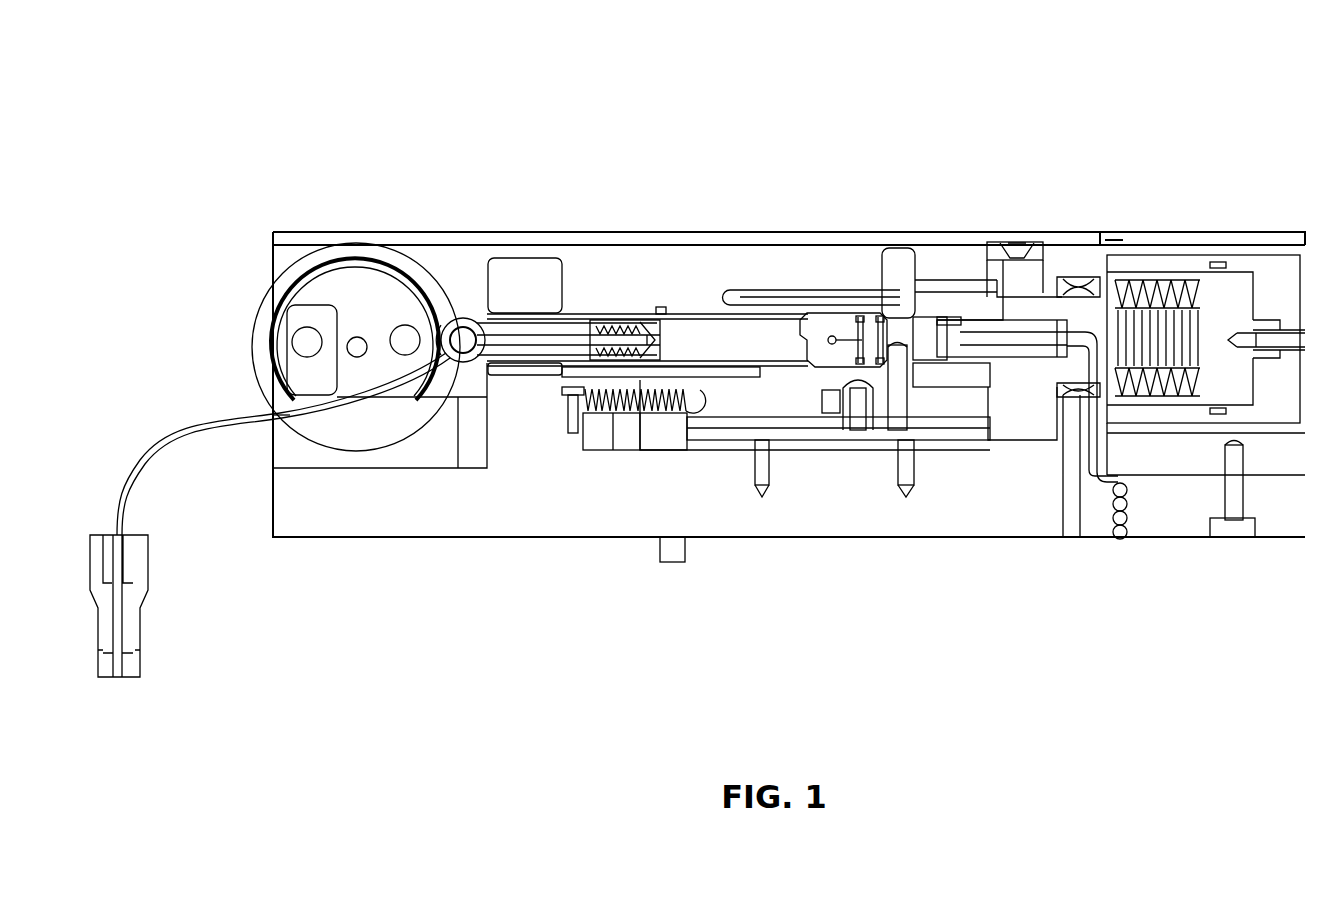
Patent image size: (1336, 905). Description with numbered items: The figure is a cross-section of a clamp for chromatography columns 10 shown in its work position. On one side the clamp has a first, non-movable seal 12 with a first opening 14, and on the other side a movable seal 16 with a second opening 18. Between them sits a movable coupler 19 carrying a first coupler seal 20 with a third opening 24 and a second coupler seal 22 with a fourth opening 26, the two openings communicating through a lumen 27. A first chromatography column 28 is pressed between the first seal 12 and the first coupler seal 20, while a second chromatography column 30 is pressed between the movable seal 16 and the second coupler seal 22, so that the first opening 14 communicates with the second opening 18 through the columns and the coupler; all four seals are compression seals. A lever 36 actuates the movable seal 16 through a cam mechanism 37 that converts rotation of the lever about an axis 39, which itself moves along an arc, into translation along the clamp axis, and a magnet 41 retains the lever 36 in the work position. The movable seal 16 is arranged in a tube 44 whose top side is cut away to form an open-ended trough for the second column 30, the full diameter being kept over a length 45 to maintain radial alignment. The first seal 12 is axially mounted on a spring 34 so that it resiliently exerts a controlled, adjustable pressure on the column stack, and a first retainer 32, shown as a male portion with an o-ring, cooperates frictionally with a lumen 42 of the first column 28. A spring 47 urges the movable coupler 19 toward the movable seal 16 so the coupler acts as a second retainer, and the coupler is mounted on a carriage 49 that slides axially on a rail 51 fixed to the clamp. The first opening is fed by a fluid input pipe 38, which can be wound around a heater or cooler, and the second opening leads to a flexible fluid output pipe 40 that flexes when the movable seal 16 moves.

The clamp for chromatography columns 10 is at (352, 160).
The first seal 12 is at (968, 294).
The first opening 14 is at (1000, 352).
The movable seal 16 is at (668, 348).
The second opening 18 is at (665, 330).
The movable coupler 19 is at (903, 300).
The first coupler seal 20 is at (905, 432).
The second coupler seal 22 is at (866, 432).
The third opening 24 is at (950, 320).
The fourth opening 26 is at (858, 320).
The lumen 27 is at (882, 318).
The first chromatography column 28 is at (923, 408).
The second chromatography column 30 is at (798, 348).
The first retainer 32 is at (985, 262).
The spring 34 is at (1138, 272).
The lever 36 is at (478, 232).
The cam mechanism 37 is at (318, 262).
The fluid input pipe 38 is at (1126, 525).
The axis 39 is at (362, 337).
The fluid output pipe 40 is at (343, 410).
The magnet 41 is at (1045, 245).
The lumen 42 is at (1092, 420).
The tube 44 is at (653, 340).
The length 45 is at (662, 306).
The spring 47 is at (637, 414).
The carriage 49 is at (915, 445).
The rail 51 is at (758, 445).